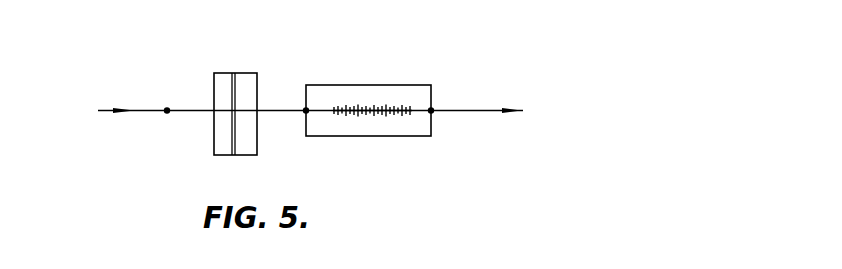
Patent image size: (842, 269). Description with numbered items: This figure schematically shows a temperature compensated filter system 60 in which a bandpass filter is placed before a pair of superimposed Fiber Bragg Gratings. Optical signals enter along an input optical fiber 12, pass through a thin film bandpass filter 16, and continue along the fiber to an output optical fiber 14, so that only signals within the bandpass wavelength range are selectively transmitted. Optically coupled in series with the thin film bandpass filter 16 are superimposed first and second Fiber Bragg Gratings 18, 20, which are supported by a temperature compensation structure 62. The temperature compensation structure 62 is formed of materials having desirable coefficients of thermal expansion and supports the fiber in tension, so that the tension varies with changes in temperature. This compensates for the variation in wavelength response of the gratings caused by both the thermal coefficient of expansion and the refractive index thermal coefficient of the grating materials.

The input optical fiber 12 is at (107, 107).
The output optical fiber 14 is at (520, 109).
The thin film bandpass filter 16 is at (235, 83).
The first Fiber Bragg Grating 18 is at (357, 102).
The second Fiber Bragg Grating 20 is at (385, 118).
The temperature compensated filter system 60 is at (478, 40).
The temperature compensation structure 62 is at (413, 84).